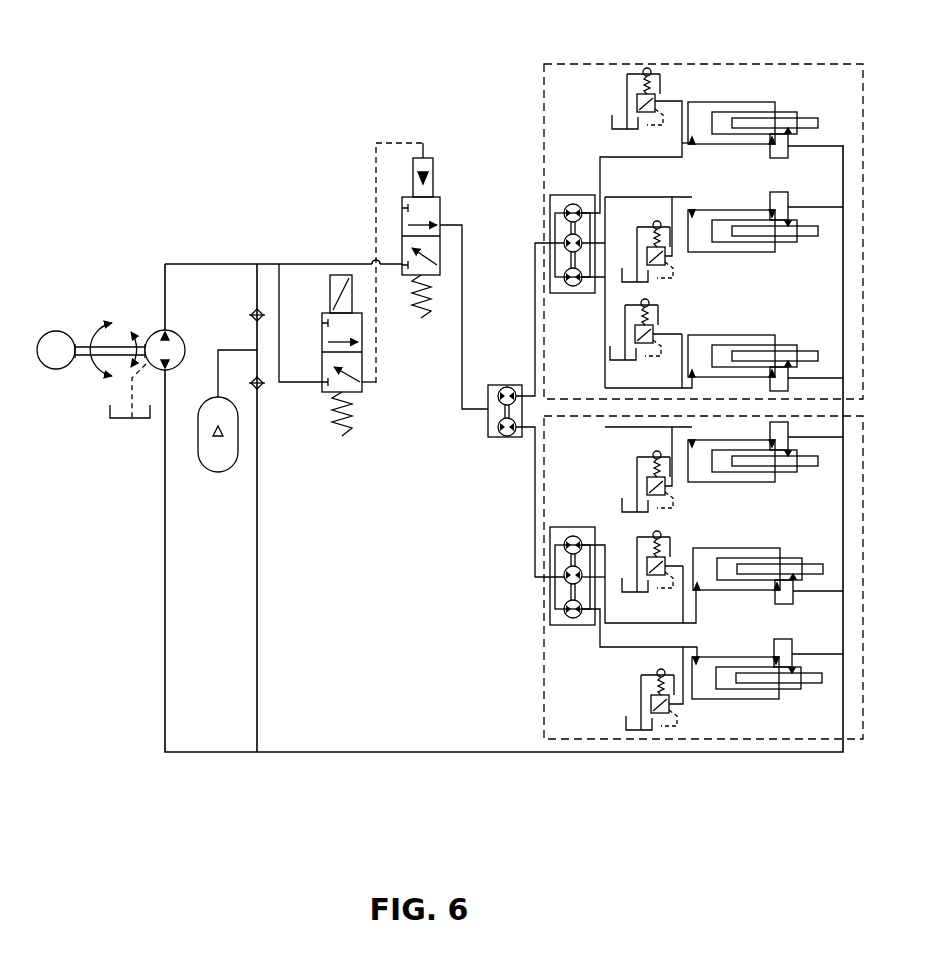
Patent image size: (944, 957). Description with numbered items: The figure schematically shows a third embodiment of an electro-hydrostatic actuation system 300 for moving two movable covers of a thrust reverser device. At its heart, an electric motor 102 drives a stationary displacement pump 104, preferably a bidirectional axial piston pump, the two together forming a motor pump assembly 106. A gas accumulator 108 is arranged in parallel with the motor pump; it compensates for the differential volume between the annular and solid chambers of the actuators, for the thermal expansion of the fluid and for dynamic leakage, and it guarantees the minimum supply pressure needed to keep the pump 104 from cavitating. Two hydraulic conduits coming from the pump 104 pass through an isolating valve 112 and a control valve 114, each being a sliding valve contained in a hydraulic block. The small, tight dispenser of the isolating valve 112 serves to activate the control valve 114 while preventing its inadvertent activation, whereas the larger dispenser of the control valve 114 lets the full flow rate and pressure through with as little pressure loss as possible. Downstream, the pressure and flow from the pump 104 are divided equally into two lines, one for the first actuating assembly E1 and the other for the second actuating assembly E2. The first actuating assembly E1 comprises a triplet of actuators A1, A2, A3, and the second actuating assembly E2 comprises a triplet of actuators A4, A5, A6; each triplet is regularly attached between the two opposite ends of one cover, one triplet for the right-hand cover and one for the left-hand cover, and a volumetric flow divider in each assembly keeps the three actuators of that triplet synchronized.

The hydraulic system 300 is at (132, 615).
The electric motor 102 is at (50, 370).
The stationary displacement pump 104 is at (160, 330).
The motor pump assembly 106 is at (93, 307).
The gas accumulator 108 is at (218, 473).
The isolating valve 112 is at (335, 442).
The control valve 114 is at (436, 141).
The first actuating assembly E1 is at (710, 63).
The second actuating assembly E2 is at (768, 739).
The actuator A1 is at (818, 108).
The actuator A2 is at (823, 223).
The actuator A3 is at (810, 337).
The actuator A4 is at (810, 478).
The actuator A5 is at (830, 578).
The actuator A6 is at (825, 692).